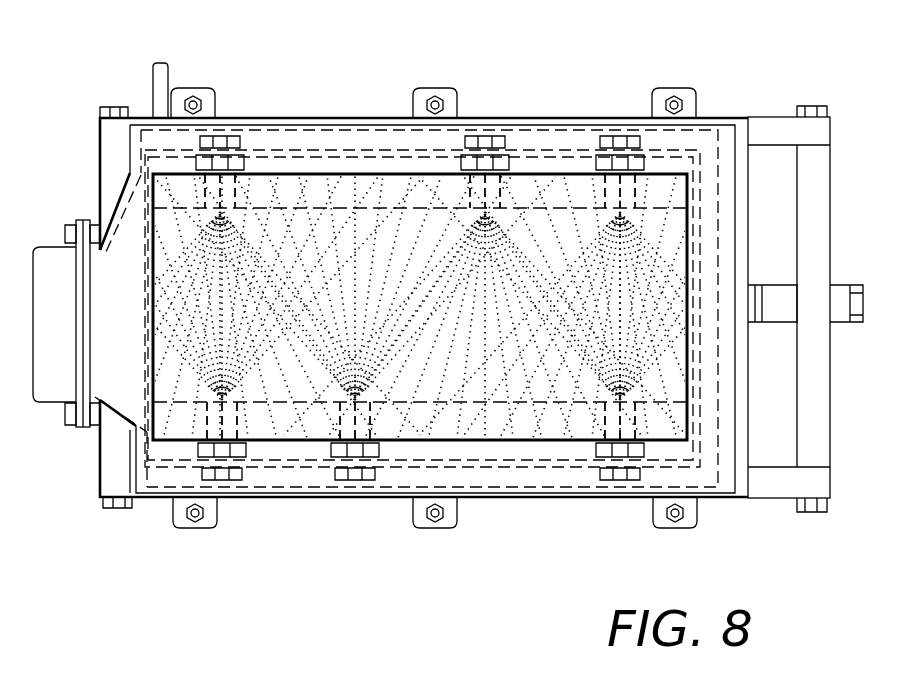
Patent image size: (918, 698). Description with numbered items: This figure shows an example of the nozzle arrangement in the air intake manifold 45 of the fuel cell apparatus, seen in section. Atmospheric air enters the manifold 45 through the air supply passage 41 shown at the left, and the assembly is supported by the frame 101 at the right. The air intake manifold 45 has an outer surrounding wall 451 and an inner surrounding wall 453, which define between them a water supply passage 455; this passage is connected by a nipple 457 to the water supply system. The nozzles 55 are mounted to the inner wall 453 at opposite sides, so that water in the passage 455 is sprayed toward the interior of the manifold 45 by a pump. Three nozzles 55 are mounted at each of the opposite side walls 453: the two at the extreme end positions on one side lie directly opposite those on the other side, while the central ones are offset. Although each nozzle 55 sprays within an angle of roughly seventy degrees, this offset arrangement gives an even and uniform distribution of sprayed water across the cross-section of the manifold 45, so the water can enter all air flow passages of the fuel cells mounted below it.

The air supply passage 41 is at (35, 247).
The air intake manifold 45 is at (598, 54).
The nozzles 55 is at (234, 146).
The frame 101 is at (832, 133).
The outer surrounding wall 451 is at (530, 133).
The inner surrounding wall 453 is at (315, 148).
The water supply passage 455 is at (372, 140).
The nipple 457 is at (848, 284).